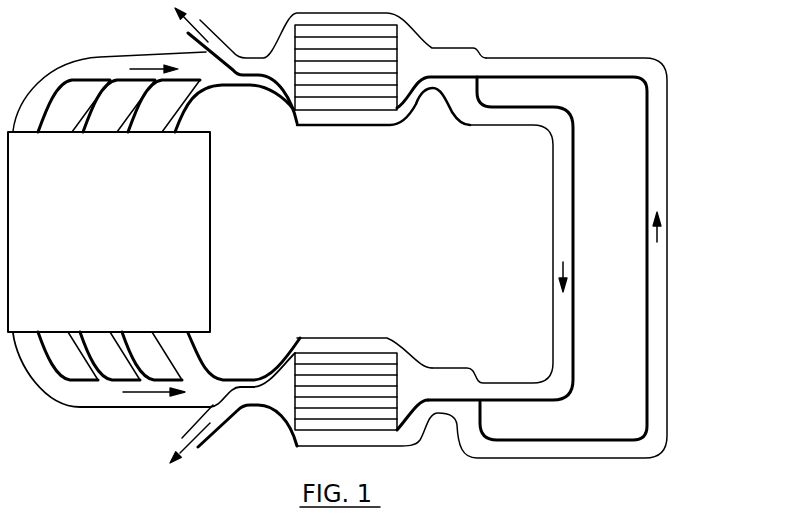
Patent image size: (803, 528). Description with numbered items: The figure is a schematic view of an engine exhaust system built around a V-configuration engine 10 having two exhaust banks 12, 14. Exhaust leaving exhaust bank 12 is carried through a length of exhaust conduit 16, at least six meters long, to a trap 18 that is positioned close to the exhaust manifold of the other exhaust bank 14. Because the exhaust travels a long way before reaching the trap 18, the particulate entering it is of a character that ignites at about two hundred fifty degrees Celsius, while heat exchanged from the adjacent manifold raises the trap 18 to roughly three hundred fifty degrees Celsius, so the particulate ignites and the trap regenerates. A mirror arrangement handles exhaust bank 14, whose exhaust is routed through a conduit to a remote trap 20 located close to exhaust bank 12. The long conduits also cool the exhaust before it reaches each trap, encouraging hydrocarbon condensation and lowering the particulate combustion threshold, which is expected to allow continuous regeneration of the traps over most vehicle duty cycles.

The V-configuration engine 10 is at (213, 240).
The exhaust bank 12 is at (80, 72).
The exhaust bank 14 is at (100, 393).
The exhaust conduit 16 is at (537, 118).
The trap 18 is at (410, 397).
The remote trap 20 is at (405, 65).